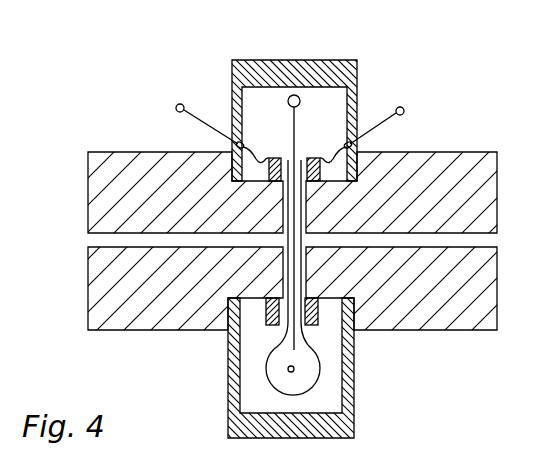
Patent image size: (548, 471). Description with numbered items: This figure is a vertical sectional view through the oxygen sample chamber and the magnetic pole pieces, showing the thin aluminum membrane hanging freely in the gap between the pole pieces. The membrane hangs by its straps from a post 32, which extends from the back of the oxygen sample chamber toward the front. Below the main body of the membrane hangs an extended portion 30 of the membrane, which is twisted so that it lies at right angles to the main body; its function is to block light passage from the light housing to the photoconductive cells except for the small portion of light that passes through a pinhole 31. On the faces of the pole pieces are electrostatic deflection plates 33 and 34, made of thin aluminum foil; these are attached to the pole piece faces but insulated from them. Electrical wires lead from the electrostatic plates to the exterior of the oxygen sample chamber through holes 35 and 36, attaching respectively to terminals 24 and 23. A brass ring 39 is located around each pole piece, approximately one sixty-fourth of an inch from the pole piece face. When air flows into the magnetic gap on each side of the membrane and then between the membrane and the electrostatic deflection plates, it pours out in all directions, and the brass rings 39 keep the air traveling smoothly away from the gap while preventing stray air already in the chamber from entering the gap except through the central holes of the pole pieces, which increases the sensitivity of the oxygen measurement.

The terminal 23 is at (395, 118).
The terminal 24 is at (191, 118).
The extended portion of the membrane 30 is at (303, 380).
The pinhole 31 is at (288, 369).
The post 32 is at (296, 95).
The electrostatic deflection plate 33 is at (291, 208).
The electrostatic deflection plate 34 is at (302, 210).
The hole 35 is at (237, 144).
The hole 36 is at (352, 146).
The brass ring 39 is at (274, 324).